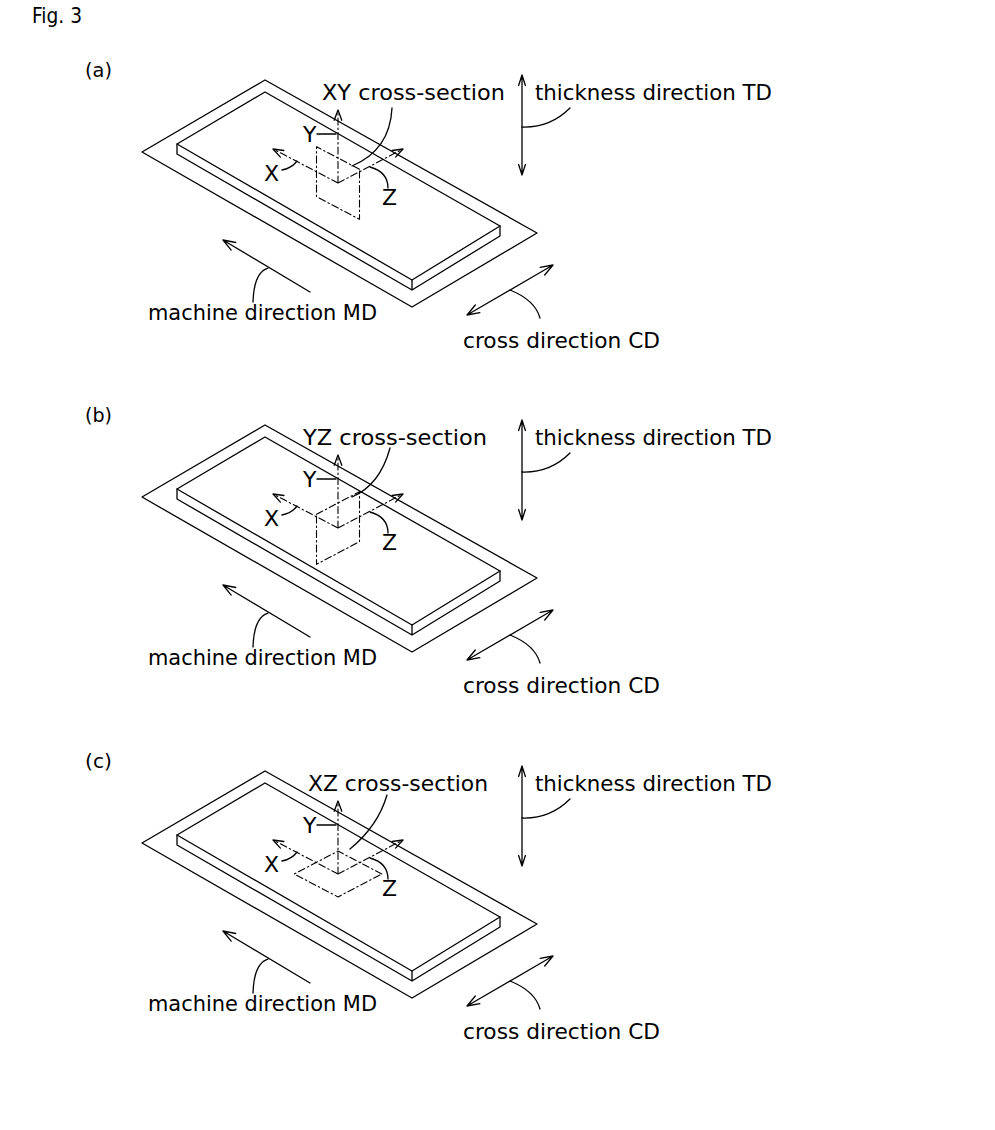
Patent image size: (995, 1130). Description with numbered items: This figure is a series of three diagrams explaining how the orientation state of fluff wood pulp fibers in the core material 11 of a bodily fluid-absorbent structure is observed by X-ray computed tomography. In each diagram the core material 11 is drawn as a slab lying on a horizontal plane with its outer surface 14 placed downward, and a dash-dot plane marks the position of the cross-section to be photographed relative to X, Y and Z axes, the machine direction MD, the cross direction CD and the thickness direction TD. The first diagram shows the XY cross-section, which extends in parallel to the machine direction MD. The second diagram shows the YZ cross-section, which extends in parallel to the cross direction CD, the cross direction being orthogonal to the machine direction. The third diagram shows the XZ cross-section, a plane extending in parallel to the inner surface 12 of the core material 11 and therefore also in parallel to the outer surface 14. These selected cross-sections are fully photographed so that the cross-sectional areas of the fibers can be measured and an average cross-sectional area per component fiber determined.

The core material 11 is at (228, 113).
The inner surface 12 is at (430, 207).
The outer surface 14 is at (237, 162).